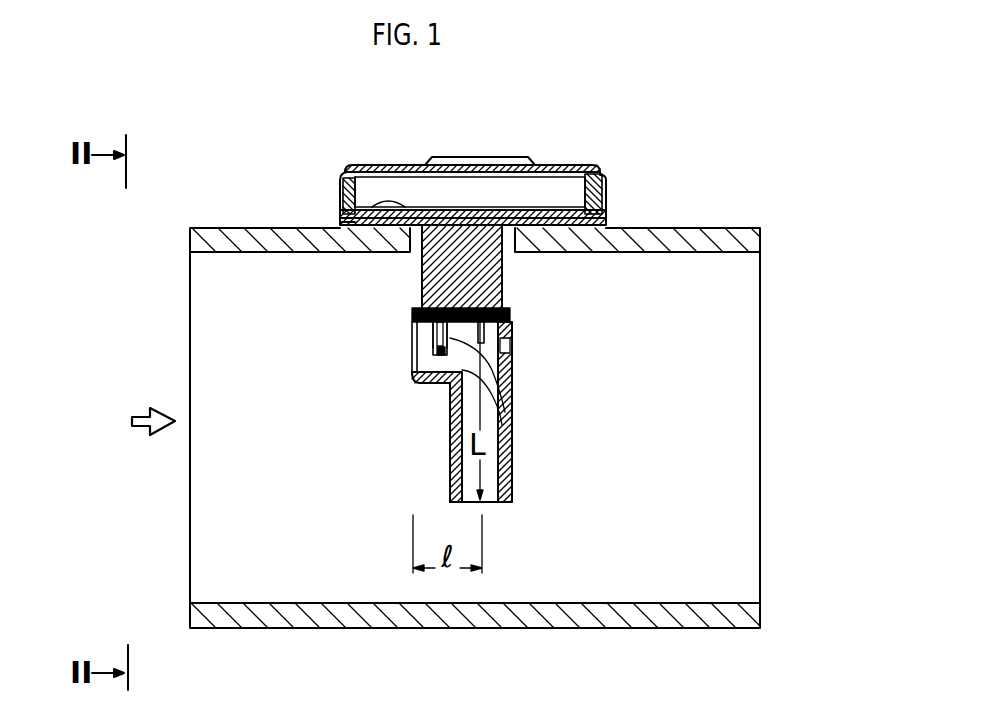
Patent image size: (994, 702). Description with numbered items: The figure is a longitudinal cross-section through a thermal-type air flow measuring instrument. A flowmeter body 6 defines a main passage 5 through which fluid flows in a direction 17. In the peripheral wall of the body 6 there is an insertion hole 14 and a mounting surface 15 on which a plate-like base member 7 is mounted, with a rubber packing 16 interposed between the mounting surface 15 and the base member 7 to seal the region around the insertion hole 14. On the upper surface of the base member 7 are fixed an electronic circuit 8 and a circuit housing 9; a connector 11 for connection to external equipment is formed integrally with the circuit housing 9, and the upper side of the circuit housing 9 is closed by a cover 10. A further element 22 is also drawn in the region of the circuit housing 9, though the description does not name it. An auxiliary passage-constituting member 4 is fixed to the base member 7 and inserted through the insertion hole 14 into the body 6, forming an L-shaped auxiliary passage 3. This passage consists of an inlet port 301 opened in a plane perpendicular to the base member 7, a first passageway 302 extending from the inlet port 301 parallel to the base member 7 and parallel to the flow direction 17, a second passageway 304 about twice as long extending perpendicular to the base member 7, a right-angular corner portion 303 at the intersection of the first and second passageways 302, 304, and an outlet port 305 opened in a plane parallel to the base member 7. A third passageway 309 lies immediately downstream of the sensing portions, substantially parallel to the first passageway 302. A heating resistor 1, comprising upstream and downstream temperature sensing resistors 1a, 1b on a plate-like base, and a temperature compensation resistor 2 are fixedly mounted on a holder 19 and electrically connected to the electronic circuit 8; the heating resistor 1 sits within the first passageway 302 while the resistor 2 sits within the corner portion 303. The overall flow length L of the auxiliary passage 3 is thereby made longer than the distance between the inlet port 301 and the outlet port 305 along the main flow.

The heating resistor 1 is at (425, 352).
The temperature sensing resistor 1a is at (437, 338).
The temperature sensing resistor 1b is at (512, 372).
The temperature compensation resistor 2 is at (510, 326).
The auxiliary passage 3 is at (455, 465).
The auxiliary passage-constituting member 4 is at (512, 492).
The main passage 5 is at (738, 277).
The flowmeter body 6 is at (738, 228).
The base member 7 is at (606, 216).
The electronic circuit 8 is at (548, 205).
The circuit housing 9 is at (608, 182).
The cover 10 is at (355, 172).
The connector 11 is at (512, 157).
The insertion hole 14 is at (420, 245).
The mounting surface 15 is at (340, 206).
The rubber packing 16 is at (606, 223).
The direction of flow 17 is at (145, 430).
The holder 19 is at (500, 270).
The inner wall 22 is at (388, 205).
The inlet port 301 is at (437, 345).
The first passageway 302 is at (413, 372).
The right-angular corner portion 303 is at (480, 362).
The second passageway 304 is at (500, 420).
The outlet port 305 is at (492, 503).
The third passageway 309 is at (512, 348).